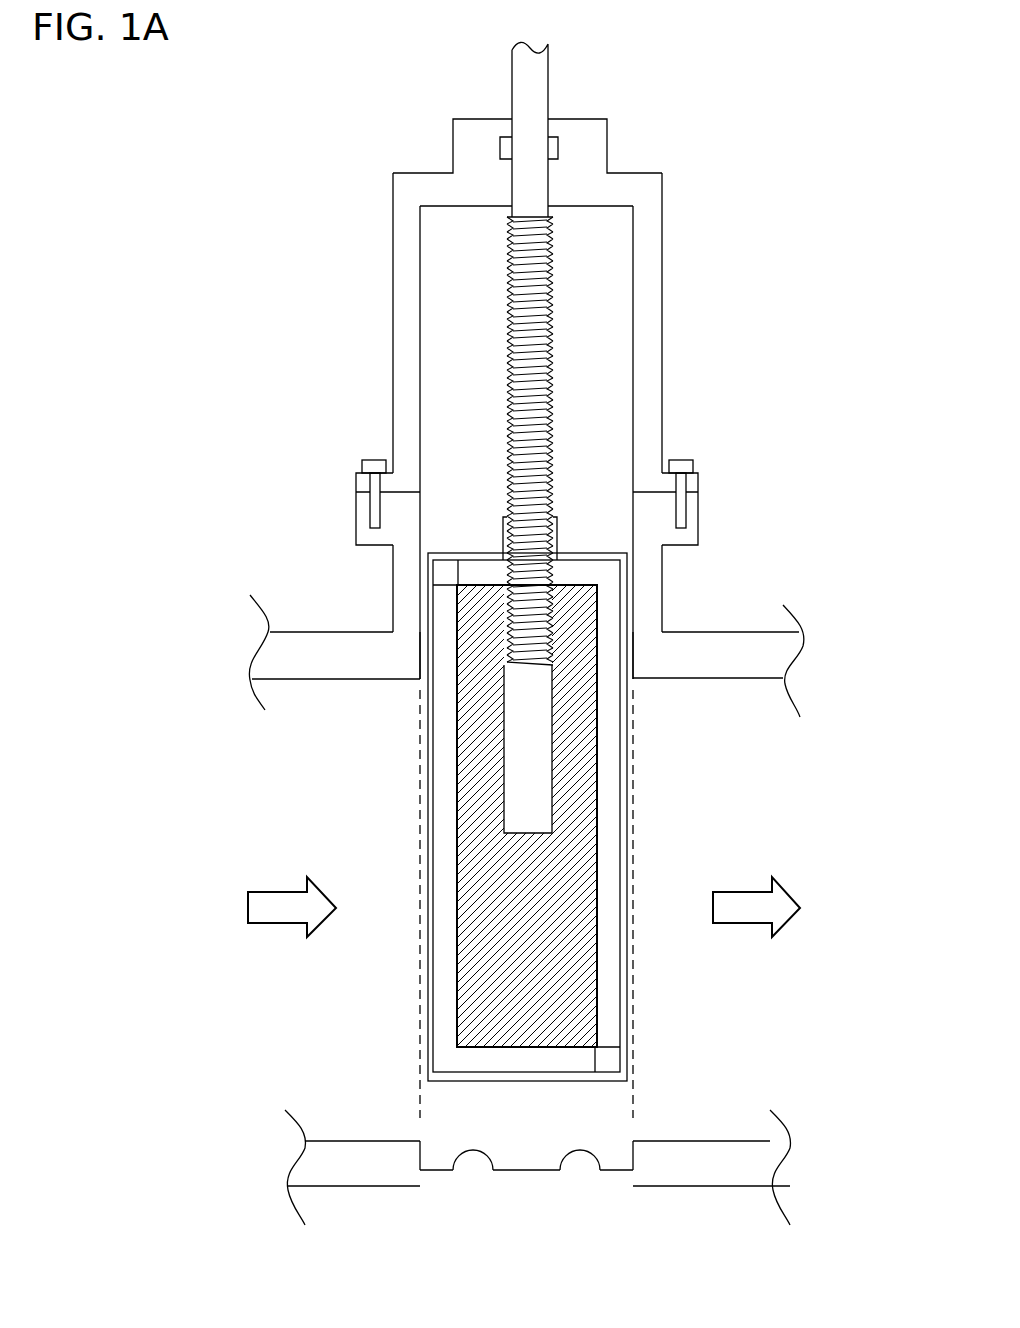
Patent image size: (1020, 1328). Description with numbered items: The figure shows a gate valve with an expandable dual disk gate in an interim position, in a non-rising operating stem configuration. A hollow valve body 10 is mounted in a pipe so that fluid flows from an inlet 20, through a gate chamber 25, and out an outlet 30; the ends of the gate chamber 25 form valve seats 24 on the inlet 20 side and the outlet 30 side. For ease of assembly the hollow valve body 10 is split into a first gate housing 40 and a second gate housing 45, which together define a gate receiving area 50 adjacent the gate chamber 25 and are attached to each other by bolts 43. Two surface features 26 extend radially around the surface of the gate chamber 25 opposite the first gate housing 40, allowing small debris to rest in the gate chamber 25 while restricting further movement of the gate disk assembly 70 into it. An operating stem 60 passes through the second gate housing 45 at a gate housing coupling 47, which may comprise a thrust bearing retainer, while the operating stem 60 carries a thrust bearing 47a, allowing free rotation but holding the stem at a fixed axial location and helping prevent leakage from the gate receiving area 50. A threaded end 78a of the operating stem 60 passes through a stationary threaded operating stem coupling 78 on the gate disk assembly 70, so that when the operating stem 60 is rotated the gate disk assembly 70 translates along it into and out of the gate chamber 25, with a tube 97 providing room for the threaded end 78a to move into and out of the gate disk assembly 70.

The hollow valve body 10 is at (308, 670).
The inlet 20 is at (336, 1037).
The valve seats 24 is at (680, 1160).
The gate chamber 25 is at (629, 1118).
The surface features 26 is at (595, 1165).
The outlet 30 is at (723, 1037).
The first gate housing 40 is at (662, 573).
The bolts 43 is at (681, 460).
The second gate housing 45 is at (662, 262).
The gate housing coupling 47 is at (453, 145).
The thrust bearing 47a is at (558, 150).
The gate receiving area 50 is at (603, 324).
The operating stem 60 is at (548, 73).
The gate disk assembly 70 is at (425, 866).
The operating stem coupling 78 is at (503, 530).
The threaded end 78a is at (505, 467).
The tube 97 is at (545, 760).